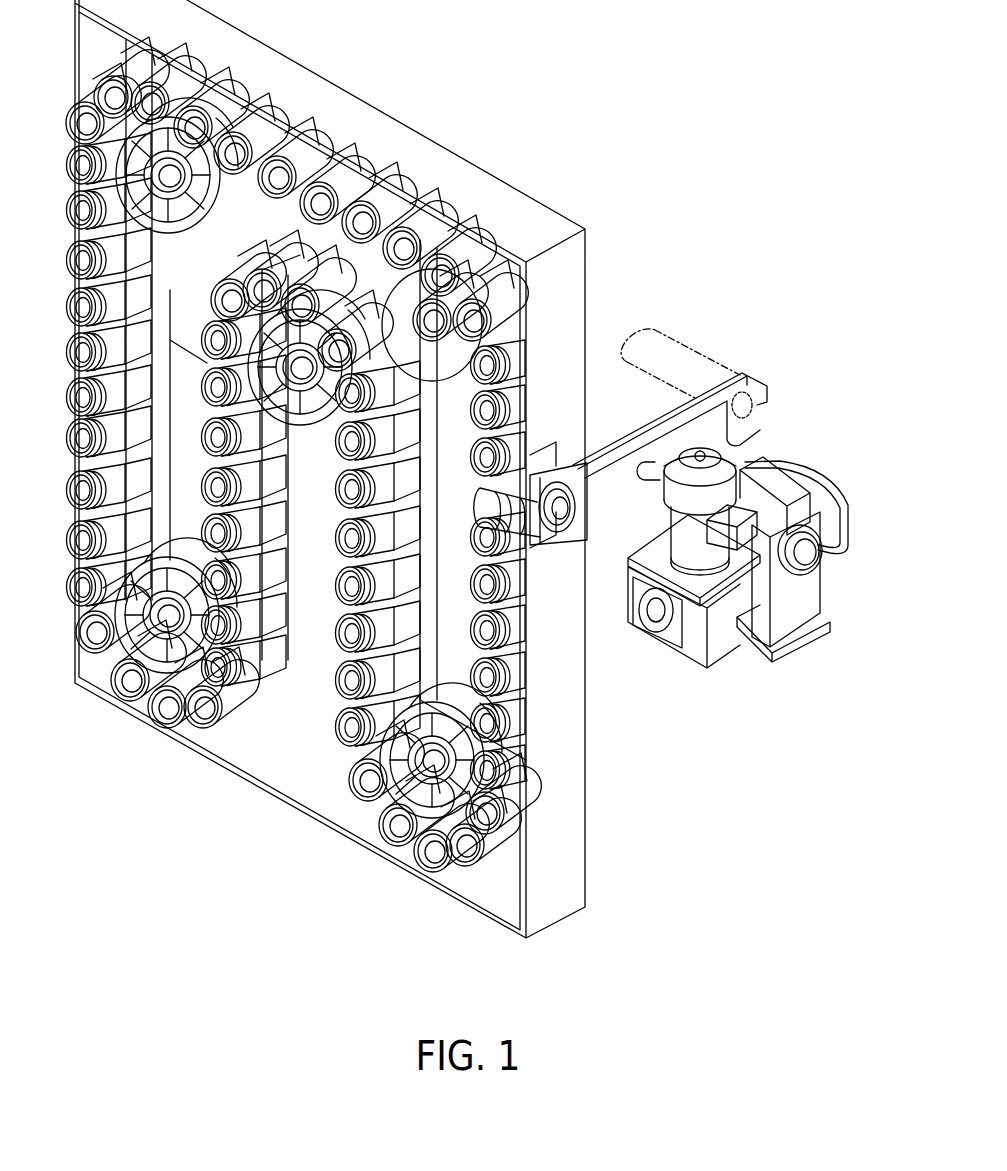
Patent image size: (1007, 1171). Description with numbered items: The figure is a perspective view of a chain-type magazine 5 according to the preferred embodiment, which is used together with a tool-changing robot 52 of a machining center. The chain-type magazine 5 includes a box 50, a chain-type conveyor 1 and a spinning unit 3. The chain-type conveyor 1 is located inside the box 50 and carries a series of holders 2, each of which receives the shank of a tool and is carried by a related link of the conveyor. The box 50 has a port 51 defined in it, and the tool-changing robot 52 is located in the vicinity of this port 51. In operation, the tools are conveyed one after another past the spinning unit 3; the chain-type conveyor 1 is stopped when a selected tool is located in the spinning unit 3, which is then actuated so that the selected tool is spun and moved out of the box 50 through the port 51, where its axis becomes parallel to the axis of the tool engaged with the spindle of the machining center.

The chain-type conveyor 1 is at (276, 233).
The chain-type magazine 5 is at (472, 158).
The box 50 is at (300, 712).
The port 51 is at (551, 464).
The tool-changing robot 52 is at (718, 432).
The holder 2 is at (566, 516).
The spinning unit 3 is at (522, 540).